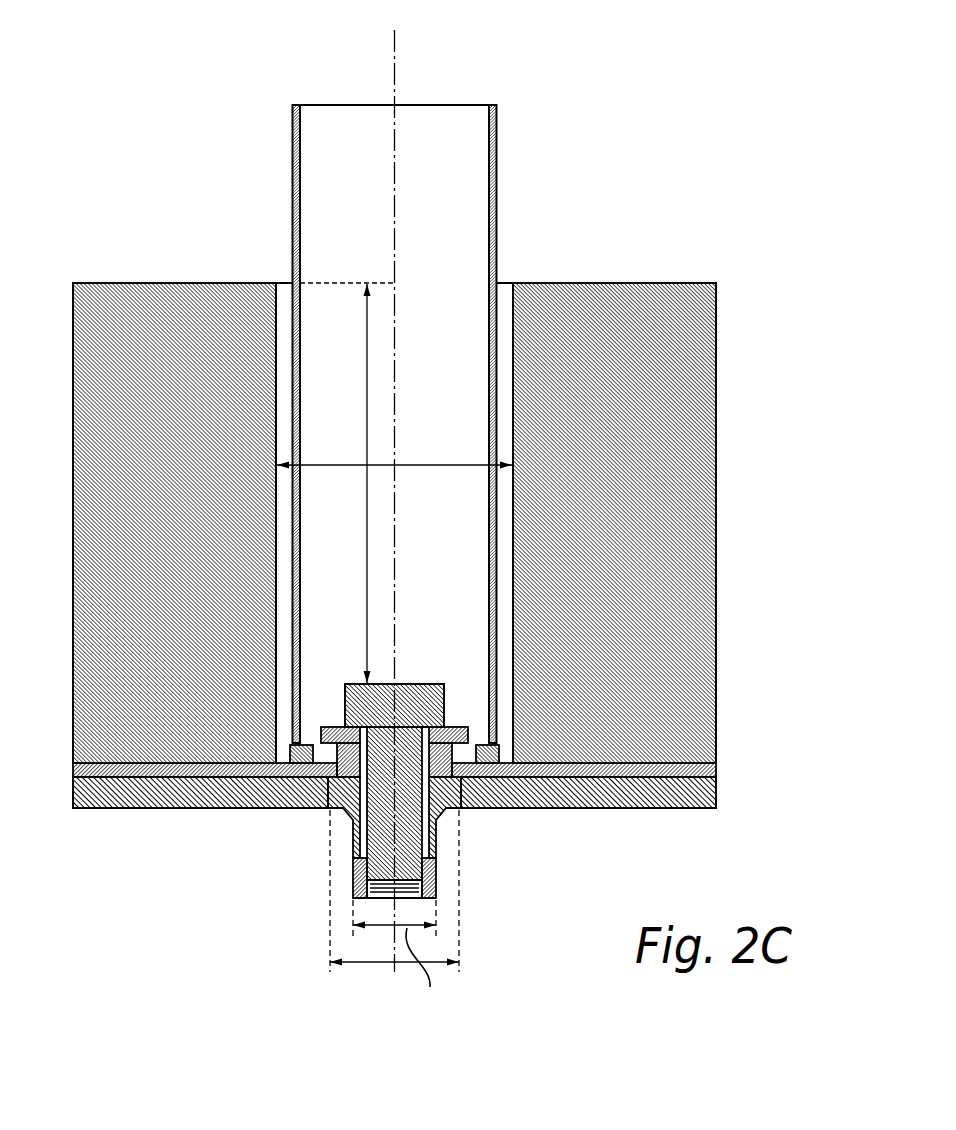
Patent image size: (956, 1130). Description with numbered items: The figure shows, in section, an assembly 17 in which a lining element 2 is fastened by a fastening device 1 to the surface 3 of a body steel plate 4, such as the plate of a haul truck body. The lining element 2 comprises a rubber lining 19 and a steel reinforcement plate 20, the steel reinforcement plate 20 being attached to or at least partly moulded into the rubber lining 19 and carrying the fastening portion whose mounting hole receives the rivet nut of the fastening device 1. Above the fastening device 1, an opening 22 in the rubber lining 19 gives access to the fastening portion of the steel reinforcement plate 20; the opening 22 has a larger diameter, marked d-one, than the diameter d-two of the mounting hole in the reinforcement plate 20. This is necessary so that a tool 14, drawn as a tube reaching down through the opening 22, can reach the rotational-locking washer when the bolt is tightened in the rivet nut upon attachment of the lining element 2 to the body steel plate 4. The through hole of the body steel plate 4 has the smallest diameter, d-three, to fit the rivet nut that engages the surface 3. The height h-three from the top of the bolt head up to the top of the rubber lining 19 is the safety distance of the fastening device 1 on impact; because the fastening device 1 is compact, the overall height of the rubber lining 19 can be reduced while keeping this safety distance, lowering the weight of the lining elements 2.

The fastening device 1 is at (308, 920).
The lining element 2 is at (712, 250).
The surface 3 is at (663, 767).
The body steel plate 4 is at (675, 793).
The tool 14 is at (497, 157).
The assembly 17 is at (200, 108).
The rubber lining 19 is at (675, 523).
The steel reinforcement plate 20 is at (710, 773).
The opening 22 is at (505, 290).